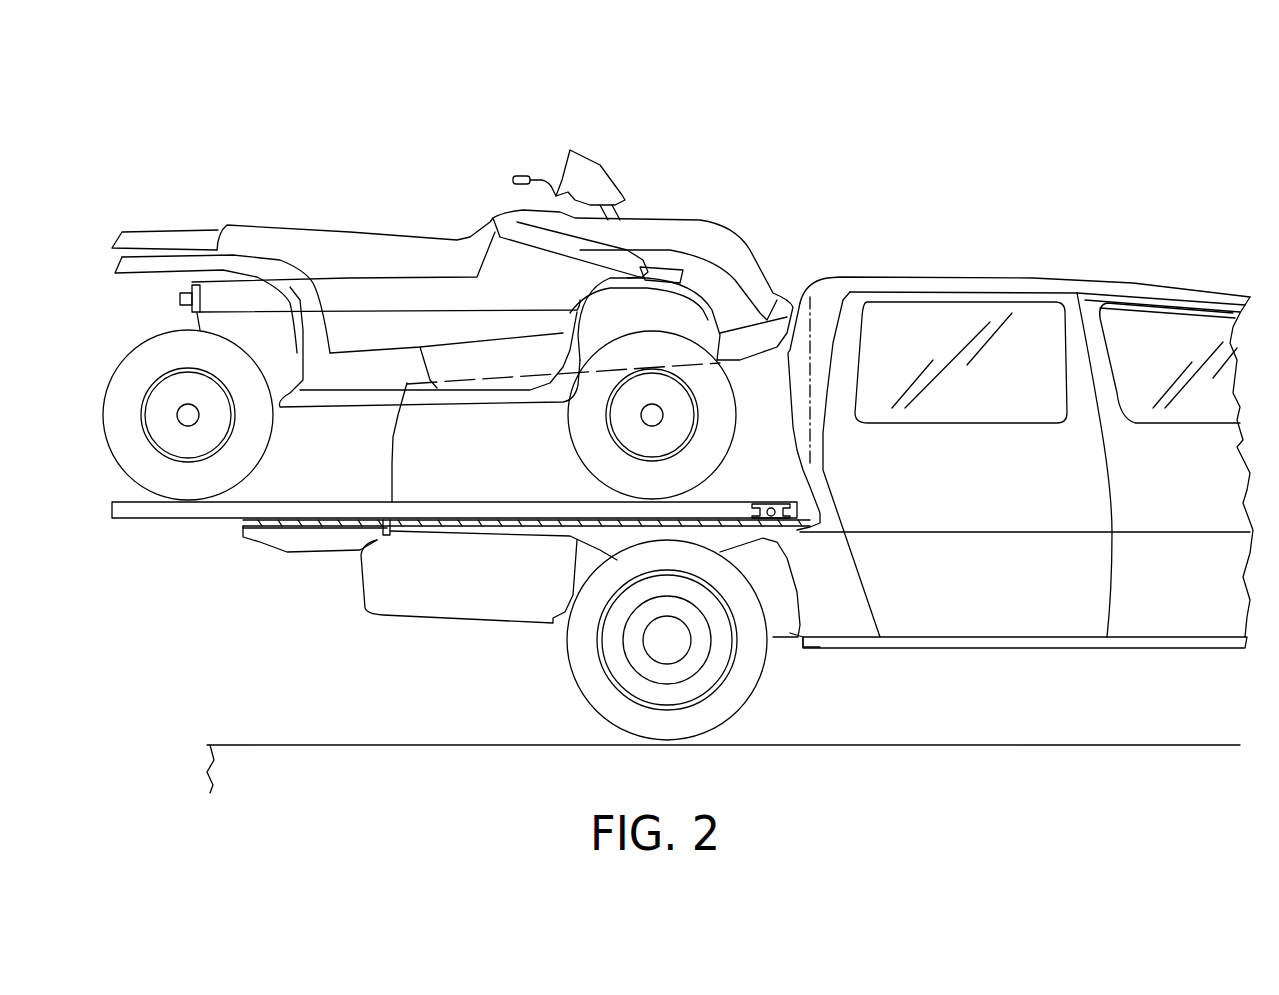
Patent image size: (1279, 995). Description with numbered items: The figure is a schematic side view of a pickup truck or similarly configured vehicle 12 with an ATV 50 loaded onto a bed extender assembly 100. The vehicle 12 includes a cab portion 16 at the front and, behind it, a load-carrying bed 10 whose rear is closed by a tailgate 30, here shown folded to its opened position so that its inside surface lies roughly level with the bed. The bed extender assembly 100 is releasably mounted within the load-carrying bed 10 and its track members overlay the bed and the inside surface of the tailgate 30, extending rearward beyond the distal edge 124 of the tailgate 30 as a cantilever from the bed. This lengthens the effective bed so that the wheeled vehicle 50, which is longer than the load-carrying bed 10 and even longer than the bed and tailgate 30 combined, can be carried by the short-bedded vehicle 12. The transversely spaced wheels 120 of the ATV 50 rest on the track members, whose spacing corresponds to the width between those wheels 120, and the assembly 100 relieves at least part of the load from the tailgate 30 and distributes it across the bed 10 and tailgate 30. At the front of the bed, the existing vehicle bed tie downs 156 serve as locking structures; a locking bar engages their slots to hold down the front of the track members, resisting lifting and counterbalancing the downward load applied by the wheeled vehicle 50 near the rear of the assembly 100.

The ATV 50 is at (450, 186).
The vehicle 12 is at (963, 208).
The cab portion 16 is at (1122, 252).
The wheels 120 is at (132, 368).
The load-carrying bed 10 is at (432, 446).
The bed extender assembly 100 is at (322, 496).
The vehicle bed tie downs 156 is at (770, 499).
The distal edge of the tailgate 124 is at (242, 523).
The tailgate 30 is at (305, 540).